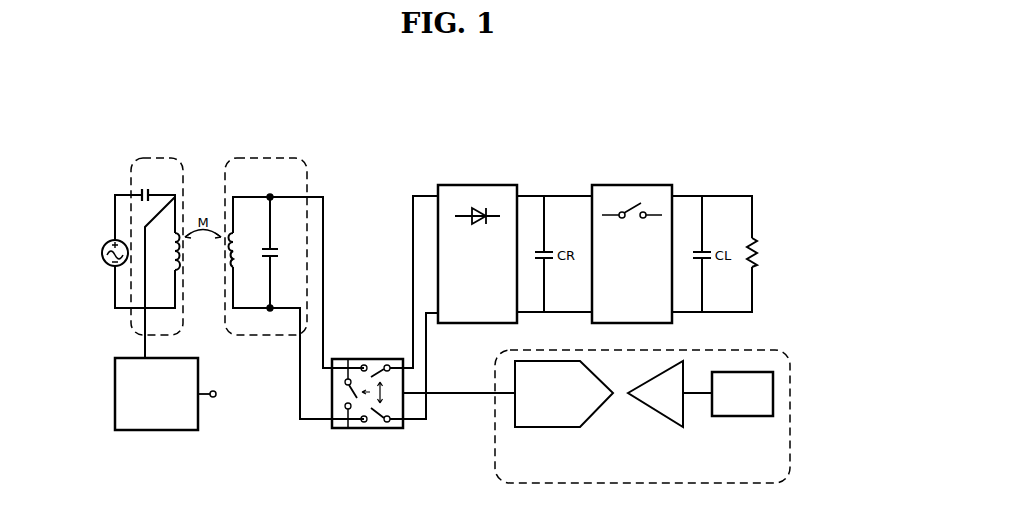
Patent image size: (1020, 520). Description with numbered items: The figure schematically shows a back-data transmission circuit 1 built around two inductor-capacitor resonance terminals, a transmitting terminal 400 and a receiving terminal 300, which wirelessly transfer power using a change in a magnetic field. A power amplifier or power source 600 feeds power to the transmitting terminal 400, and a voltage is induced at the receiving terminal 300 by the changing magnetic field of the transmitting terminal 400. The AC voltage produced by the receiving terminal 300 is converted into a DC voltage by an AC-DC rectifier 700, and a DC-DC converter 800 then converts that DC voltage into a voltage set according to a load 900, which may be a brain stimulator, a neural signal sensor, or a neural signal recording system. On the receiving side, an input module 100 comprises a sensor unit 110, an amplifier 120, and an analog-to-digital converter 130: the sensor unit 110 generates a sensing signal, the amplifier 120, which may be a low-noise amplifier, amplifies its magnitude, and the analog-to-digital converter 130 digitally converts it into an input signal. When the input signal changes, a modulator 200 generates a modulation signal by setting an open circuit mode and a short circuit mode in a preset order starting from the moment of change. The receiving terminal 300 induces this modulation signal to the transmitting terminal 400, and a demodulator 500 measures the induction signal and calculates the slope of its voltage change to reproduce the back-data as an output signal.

The back-data transmission circuit 1 is at (58, 101).
The input module 100 is at (671, 416).
The sensor unit 110 is at (742, 416).
The amplifier 120 is at (657, 412).
The analog-to-digital converter 130 is at (545, 427).
The modulator 200 is at (366, 359).
The receiving terminal 300 is at (265, 158).
The transmitting terminal 400 is at (155, 158).
The demodulator 500 is at (115, 393).
The power source 600 is at (102, 250).
The AC-DC rectifier 700 is at (477, 185).
The DC-DC converter 800 is at (630, 185).
The load 900 is at (758, 238).